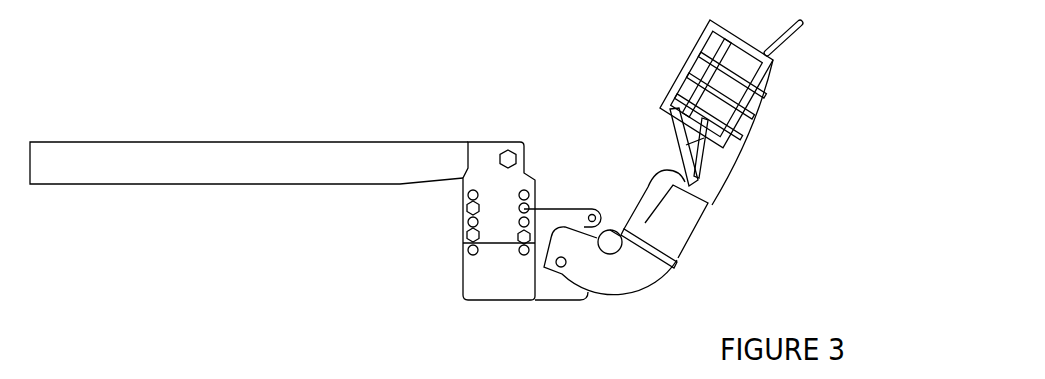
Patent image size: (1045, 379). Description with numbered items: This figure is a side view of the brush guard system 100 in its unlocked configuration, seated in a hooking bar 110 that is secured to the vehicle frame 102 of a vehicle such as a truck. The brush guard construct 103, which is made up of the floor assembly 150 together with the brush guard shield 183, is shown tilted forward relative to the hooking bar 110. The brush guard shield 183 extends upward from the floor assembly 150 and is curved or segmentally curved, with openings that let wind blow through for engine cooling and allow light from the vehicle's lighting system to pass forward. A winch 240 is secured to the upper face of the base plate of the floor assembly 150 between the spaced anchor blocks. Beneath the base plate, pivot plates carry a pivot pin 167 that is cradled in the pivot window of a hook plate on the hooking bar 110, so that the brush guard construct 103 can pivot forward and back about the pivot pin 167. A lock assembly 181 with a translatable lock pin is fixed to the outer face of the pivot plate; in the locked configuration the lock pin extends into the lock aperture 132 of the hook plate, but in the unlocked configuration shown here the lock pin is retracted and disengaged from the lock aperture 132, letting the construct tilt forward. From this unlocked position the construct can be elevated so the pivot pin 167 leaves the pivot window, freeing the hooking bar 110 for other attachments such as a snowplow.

The brush guard system 100 is at (874, 22).
The vehicle frame 102 is at (231, 140).
The brush guard construct 103 is at (736, 205).
The hooking bar 110 is at (497, 300).
The lock aperture 132 is at (594, 212).
The floor assembly 150 is at (673, 273).
The pivot pin 167 is at (560, 268).
The lock assembly 181 is at (614, 256).
The brush guard shield 183 is at (675, 70).
The winch 240 is at (661, 166).